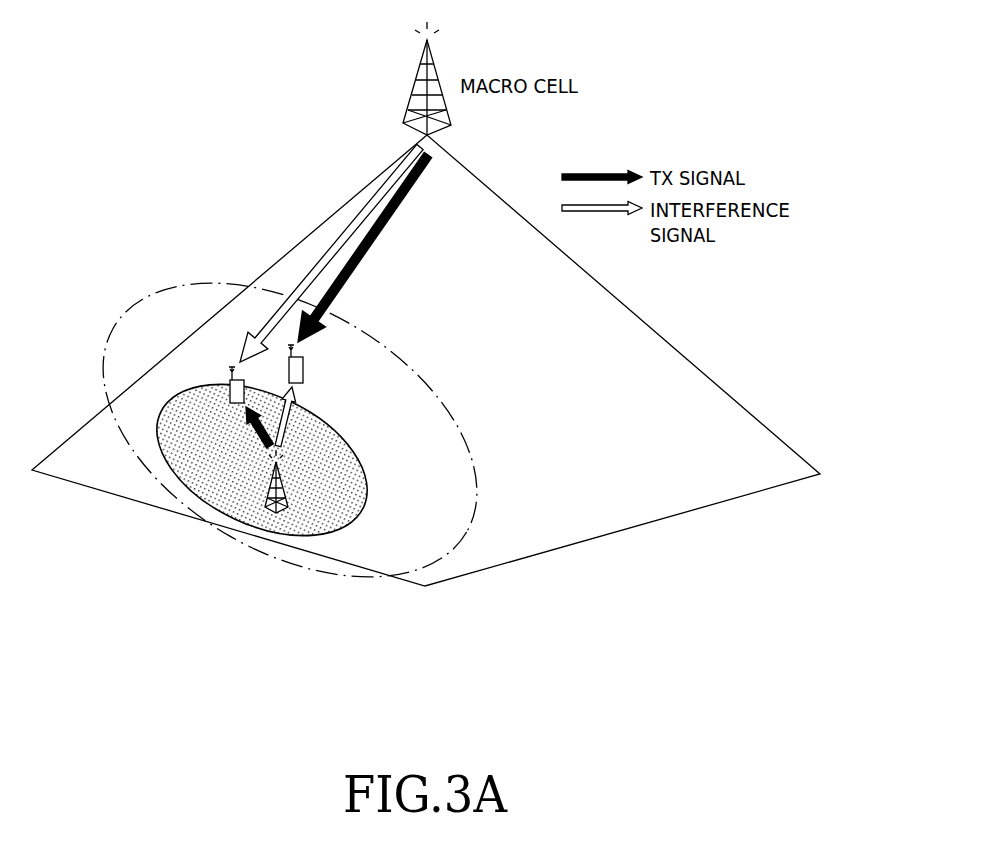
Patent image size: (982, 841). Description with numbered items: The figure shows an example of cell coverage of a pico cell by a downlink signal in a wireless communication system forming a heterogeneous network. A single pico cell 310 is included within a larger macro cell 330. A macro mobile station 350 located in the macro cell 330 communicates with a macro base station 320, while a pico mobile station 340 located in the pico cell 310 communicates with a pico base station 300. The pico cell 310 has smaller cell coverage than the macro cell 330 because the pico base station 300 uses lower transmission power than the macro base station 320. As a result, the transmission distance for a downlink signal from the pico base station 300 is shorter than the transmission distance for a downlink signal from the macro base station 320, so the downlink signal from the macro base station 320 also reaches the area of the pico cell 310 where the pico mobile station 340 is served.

The pico base station 300 is at (291, 485).
The pico cell 310 is at (370, 505).
The macro base station 320 is at (410, 85).
The macro cell 330 is at (337, 212).
The pico mobile station 340 is at (228, 378).
The macro mobile station 350 is at (306, 365).